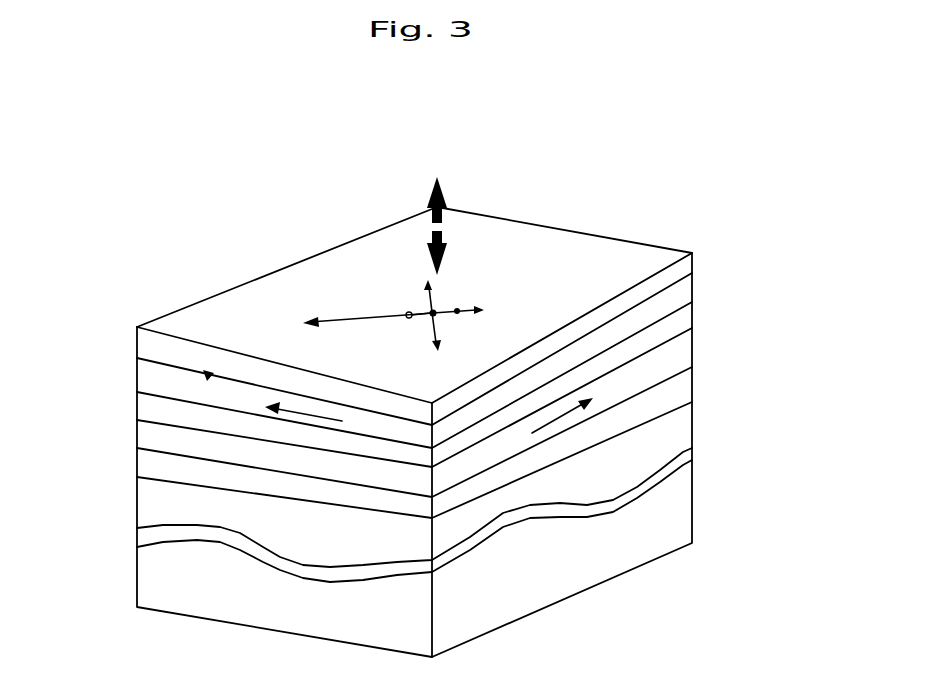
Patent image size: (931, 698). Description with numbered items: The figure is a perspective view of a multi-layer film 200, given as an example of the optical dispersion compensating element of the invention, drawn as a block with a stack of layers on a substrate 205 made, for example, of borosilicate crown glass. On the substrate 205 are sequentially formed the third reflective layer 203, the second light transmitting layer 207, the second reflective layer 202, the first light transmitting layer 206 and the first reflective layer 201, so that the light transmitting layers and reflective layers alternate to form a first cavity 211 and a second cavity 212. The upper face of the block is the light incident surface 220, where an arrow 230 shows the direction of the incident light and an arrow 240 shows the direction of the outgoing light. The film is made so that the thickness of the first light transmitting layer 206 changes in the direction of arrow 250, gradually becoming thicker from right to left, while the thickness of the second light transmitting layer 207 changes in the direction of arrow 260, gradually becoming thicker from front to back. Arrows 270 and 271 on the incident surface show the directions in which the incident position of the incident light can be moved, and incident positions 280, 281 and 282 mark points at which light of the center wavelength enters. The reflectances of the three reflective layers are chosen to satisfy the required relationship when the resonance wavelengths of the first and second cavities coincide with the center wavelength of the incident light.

The multi-layer film 200 is at (688, 110).
The first reflective layer 201 is at (158, 342).
The second reflective layer 202 is at (160, 415).
The third reflective layer 203 is at (157, 466).
The substrate 205 is at (187, 507).
The first light transmitting layer 206 is at (218, 387).
The second light transmitting layer 207 is at (207, 447).
The first cavity 211 is at (124, 381).
The second cavity 212 is at (124, 437).
The light incident surface 220 is at (597, 250).
The arrow showing the direction of incident light 230 is at (446, 238).
The arrow showing the direction of outgoing light 240 is at (447, 208).
The arrow showing the direction of the first change in film thickness 250 is at (300, 413).
The arrow showing the second change in film thickness 260 is at (565, 422).
The arrow showing the direction of movement of the incident position 270 is at (433, 313).
The arrow showing the direction of movement of the incident position 271 is at (355, 310).
The incident position 280 is at (440, 308).
The incident position 281 is at (445, 312).
The incident position 282 is at (408, 312).